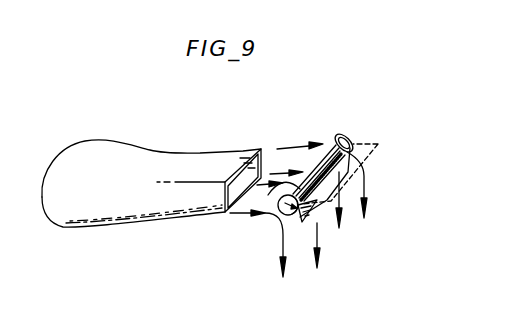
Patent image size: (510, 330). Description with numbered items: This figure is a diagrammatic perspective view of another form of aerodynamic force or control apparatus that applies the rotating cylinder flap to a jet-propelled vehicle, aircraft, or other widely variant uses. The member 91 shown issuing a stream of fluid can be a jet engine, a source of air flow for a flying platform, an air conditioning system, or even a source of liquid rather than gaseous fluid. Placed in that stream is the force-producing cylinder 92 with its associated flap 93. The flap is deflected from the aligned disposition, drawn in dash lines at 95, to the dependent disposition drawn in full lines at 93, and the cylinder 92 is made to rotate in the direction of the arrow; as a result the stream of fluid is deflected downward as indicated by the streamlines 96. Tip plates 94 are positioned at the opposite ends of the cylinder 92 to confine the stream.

The member 91 is at (163, 157).
The force-producing cylinder 92 is at (334, 152).
The flap 93 is at (350, 184).
The tip plates 94 is at (343, 135).
The aligned disposition 95 is at (378, 144).
The streamlines 96 is at (282, 243).